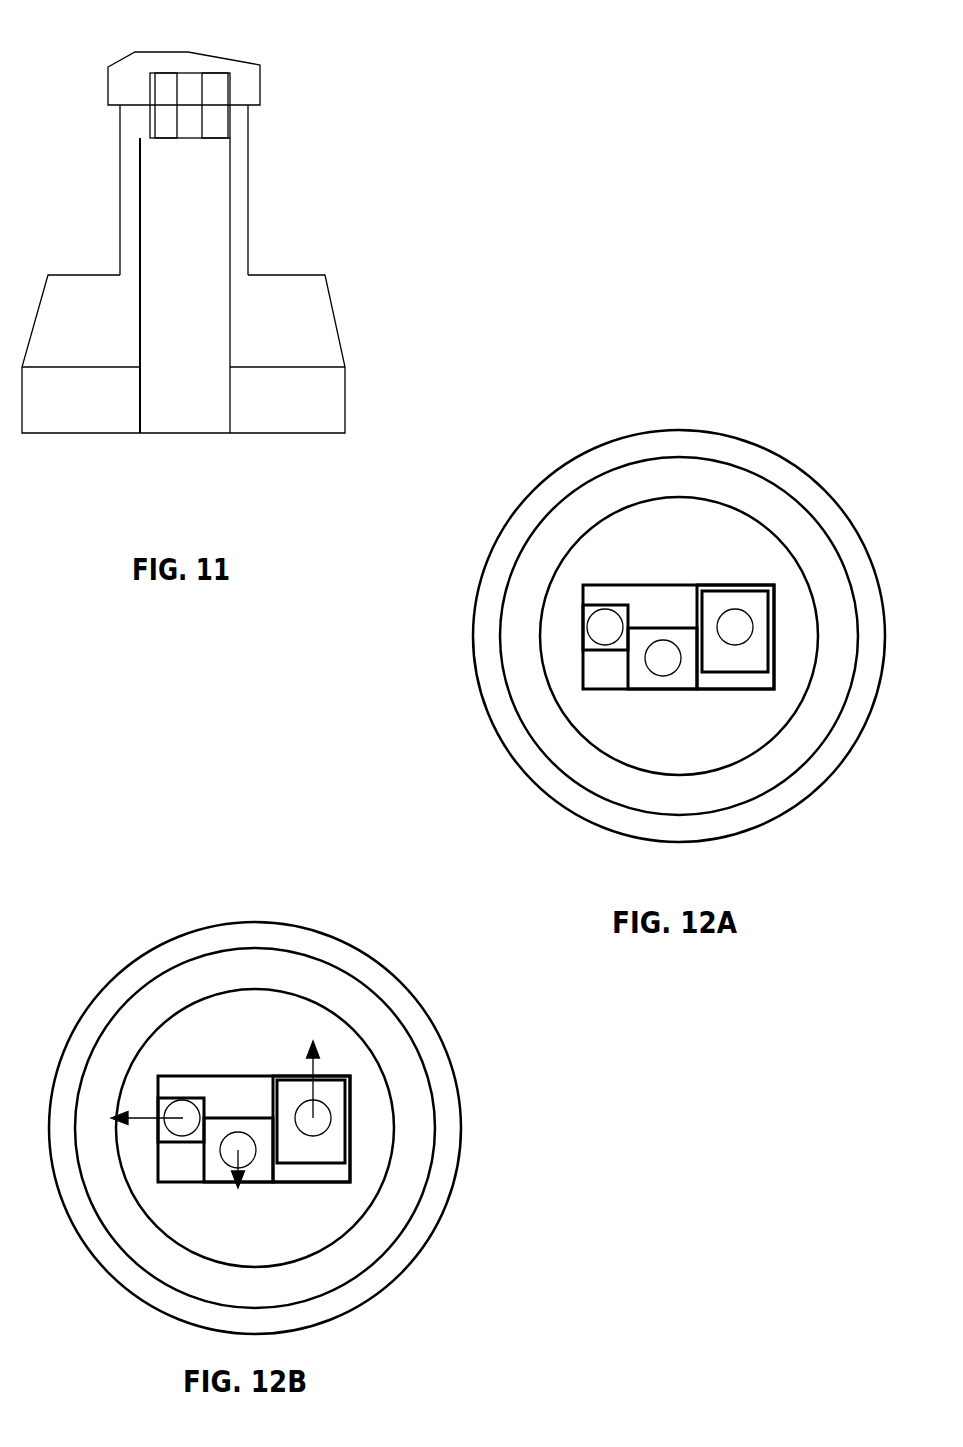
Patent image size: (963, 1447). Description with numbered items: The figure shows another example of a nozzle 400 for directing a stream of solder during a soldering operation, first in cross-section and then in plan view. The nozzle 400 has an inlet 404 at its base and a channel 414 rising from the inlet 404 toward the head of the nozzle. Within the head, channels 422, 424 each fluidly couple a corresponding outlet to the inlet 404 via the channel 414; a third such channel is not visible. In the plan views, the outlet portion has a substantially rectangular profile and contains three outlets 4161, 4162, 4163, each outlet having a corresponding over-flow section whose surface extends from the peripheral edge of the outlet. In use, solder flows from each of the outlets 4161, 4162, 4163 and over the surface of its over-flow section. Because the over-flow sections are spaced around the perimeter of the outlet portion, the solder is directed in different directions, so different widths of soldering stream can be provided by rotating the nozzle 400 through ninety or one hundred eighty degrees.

In FIG. 11, the nozzle 400 is at (325, 90).
In FIG. 12A, the nozzle 400 is at (823, 432).
In FIG. 12B, the nozzle 400 is at (121, 931).
In FIG. 11, the inlet 404 is at (155, 460).
In FIG. 11, the channel 414 is at (220, 217).
In FIG. 11, the channel 422 is at (163, 115).
In FIG. 11, the channel 424 is at (222, 125).
In FIG. 12A, the outlet 4161 is at (560, 633).
In FIG. 12A, the outlet 4162 is at (638, 694).
In FIG. 12A, the outlet 4163 is at (759, 662).